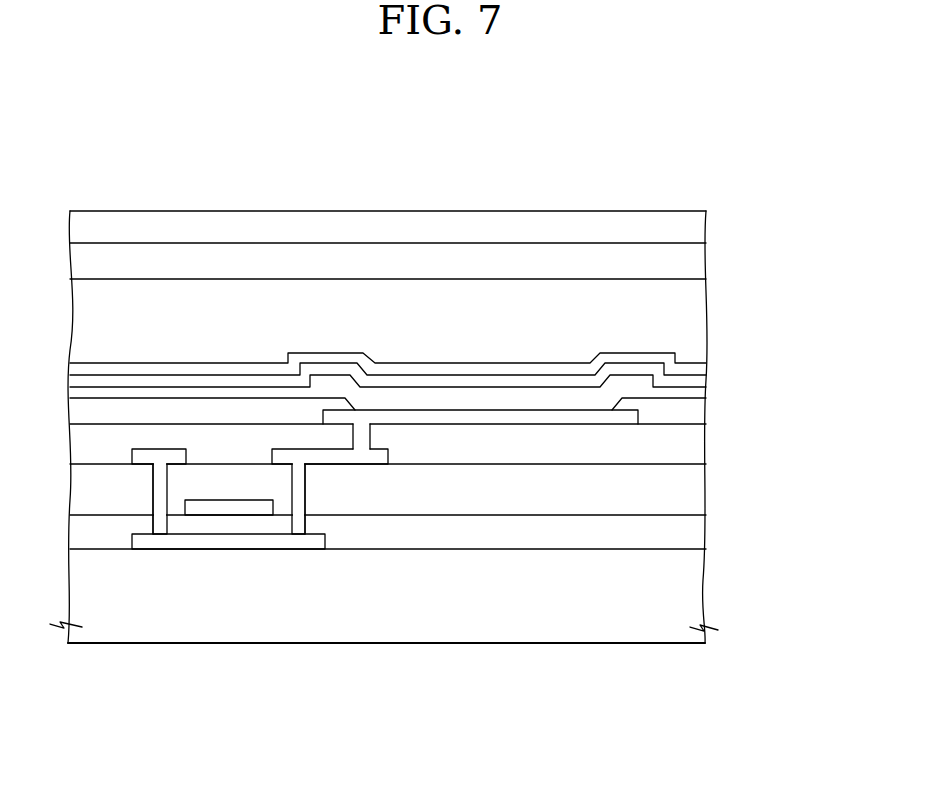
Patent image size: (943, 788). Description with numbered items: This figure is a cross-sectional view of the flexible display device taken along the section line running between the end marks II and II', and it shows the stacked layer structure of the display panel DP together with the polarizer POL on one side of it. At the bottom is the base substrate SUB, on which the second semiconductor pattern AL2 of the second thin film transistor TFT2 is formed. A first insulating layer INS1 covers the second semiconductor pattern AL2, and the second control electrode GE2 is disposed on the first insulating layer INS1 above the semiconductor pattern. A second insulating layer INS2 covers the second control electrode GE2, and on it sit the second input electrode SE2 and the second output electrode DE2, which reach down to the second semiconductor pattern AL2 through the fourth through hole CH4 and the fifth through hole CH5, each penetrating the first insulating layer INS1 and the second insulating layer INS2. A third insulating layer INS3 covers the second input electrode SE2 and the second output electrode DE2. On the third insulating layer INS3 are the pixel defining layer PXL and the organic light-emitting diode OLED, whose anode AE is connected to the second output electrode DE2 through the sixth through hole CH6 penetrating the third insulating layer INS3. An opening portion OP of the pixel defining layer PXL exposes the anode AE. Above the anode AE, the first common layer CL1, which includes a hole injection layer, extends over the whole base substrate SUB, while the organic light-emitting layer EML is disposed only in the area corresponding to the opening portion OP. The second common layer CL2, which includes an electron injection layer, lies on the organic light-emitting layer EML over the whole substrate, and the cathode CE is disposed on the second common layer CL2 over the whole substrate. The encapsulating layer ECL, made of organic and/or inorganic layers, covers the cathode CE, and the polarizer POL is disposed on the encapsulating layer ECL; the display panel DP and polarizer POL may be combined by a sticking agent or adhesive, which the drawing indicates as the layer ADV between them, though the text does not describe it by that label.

The display panel DP is at (788, 314).
The polarizer POL is at (698, 229).
The adhesive layer ADV is at (695, 262).
The encapsulating layer ECL is at (695, 321).
The cathode CE is at (698, 372).
The second common layer CL2 is at (702, 381).
The first common layer CL1 is at (702, 395).
The organic light-emitting layer EML is at (500, 393).
The pixel defining layer PXL is at (705, 414).
The opening portion OP is at (613, 403).
The anode AE is at (440, 418).
The organic light-emitting diode OLED is at (421, 548).
The third insulating layer INS3 is at (705, 440).
The second insulating layer INS2 is at (695, 492).
The first insulating layer INS1 is at (695, 530).
The base substrate SUB is at (695, 585).
The second thin film transistor TFT2 is at (250, 583).
The second input electrode SE2 is at (172, 460).
The second output electrode DE2 is at (285, 462).
The second control electrode GE2 is at (222, 508).
The second semiconductor pattern AL2 is at (245, 540).
The fourth through hole CH4 is at (145, 493).
The fifth through hole CH5 is at (303, 493).
The sixth through hole CH6 is at (370, 435).
The section line II-II' II is at (70, 661).
The section line II- II' is at (701, 661).